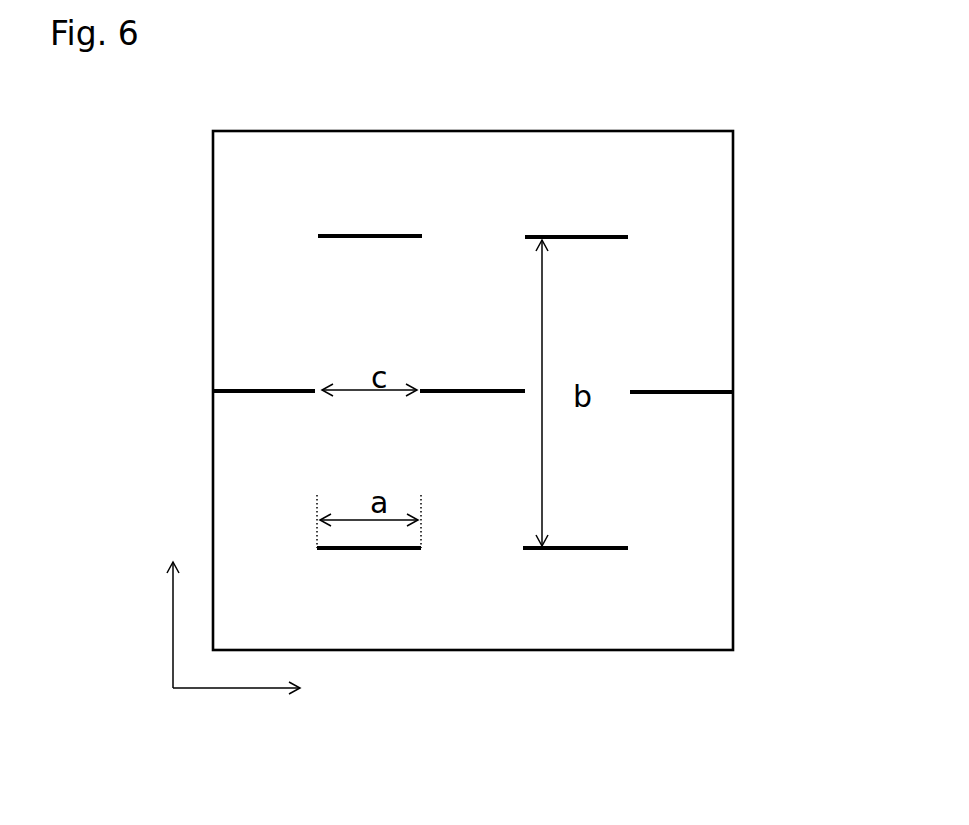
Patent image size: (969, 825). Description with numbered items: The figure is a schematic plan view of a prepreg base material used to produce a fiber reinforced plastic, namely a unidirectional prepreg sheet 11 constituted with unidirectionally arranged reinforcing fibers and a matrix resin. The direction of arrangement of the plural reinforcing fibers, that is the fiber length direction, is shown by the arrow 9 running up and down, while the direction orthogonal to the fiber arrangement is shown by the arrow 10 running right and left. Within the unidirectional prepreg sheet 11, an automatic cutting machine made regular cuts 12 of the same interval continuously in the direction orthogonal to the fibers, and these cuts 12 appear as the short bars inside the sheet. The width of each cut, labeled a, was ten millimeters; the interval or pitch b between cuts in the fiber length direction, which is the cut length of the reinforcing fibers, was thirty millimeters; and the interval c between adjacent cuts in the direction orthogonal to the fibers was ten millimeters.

The arrow 9 is at (175, 603).
The arrow 10 is at (265, 694).
The unidirectional prepreg sheet 11 is at (665, 482).
The cuts 12 is at (353, 238).